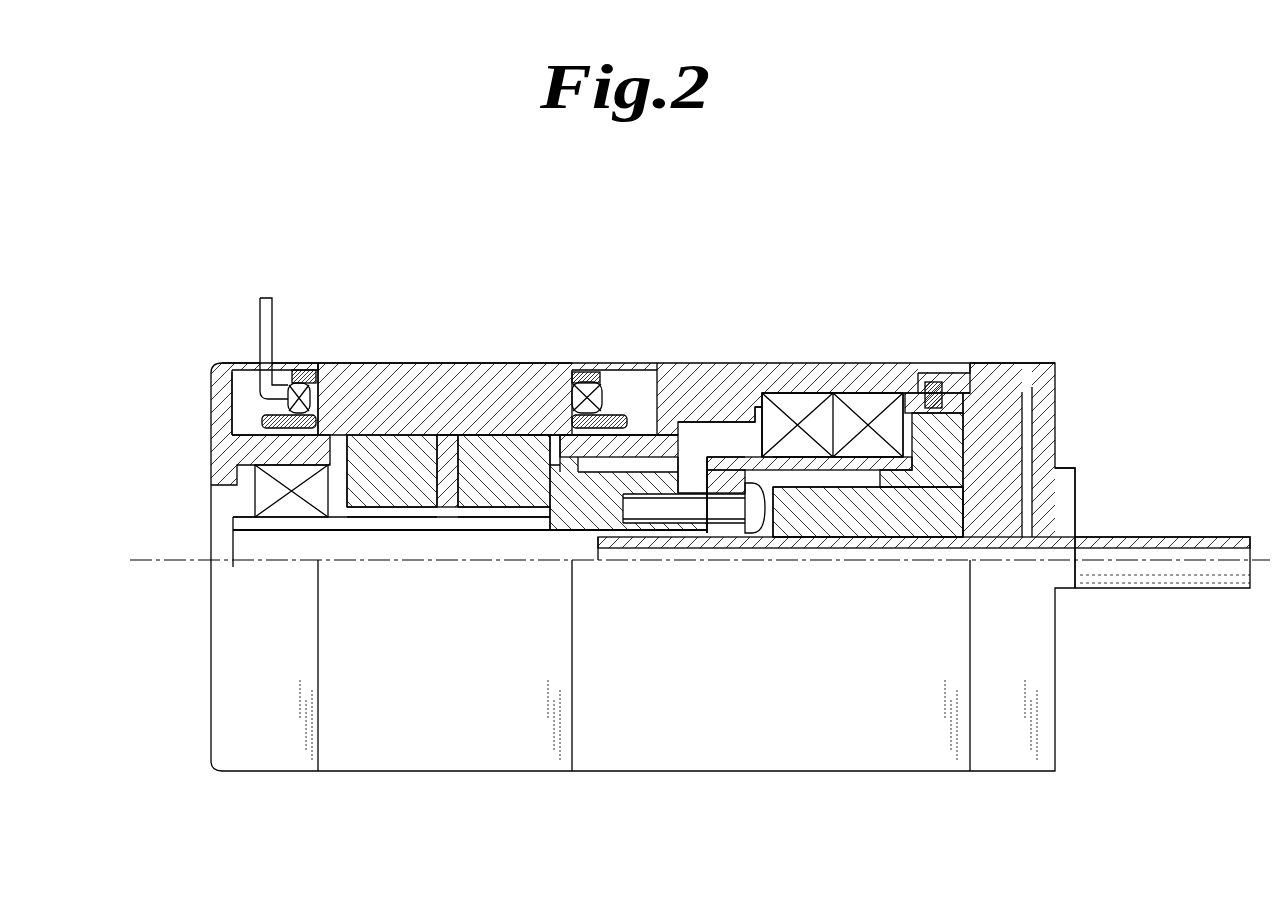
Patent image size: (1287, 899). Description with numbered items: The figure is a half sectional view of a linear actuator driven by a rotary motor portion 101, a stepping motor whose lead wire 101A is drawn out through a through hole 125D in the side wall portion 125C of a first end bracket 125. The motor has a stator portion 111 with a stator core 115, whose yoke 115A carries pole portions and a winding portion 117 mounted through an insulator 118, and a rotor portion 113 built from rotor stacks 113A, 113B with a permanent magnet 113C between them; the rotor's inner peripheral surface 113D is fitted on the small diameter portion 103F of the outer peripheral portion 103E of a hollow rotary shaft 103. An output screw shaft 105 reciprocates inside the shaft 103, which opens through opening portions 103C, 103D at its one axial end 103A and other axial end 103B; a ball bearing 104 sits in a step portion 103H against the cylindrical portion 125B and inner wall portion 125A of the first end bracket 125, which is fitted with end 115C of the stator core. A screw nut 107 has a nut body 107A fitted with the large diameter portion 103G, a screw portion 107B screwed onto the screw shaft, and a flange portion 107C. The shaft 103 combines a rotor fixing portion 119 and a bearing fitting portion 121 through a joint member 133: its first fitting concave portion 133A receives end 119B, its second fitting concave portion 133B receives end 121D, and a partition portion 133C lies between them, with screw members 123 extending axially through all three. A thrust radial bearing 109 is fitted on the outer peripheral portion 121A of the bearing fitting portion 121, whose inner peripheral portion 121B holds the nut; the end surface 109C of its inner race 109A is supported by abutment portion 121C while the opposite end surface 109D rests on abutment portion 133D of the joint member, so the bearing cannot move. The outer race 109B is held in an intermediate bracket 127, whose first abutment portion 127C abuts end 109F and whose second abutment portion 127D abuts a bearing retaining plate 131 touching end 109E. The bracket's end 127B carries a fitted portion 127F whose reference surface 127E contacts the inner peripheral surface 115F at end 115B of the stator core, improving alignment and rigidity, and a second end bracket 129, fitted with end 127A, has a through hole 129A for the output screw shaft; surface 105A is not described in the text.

The rotary motor portion 101 is at (373, 362).
The lead wire 101A is at (258, 318).
The hollow rotary shaft 103 is at (583, 530).
The one axial end 103A is at (1038, 363).
The other axial end 103B is at (247, 513).
The opening portion 103C is at (1077, 590).
The opening portion 103D is at (237, 533).
The outer peripheral portion 103E is at (480, 518).
The small diameter portion 103F is at (372, 517).
The large diameter portion 103G is at (850, 520).
The step portion 103H is at (330, 532).
The ball bearing 104 is at (265, 482).
The output screw shaft 105 is at (1238, 537).
The output shaft outer surface 105A is at (1180, 537).
The screw nut 107 is at (1003, 493).
The nut body 107A is at (805, 520).
The screw portion 107B is at (838, 515).
The flange portion 107C is at (1013, 412).
The thrust radial bearing 109 is at (865, 420).
The inner race 109A is at (818, 500).
The outer race 109B is at (842, 400).
The end surface 109C is at (875, 525).
The end surface 109D is at (780, 472).
The end 109E is at (903, 398).
The end 109F is at (790, 490).
The stator portion 111 is at (455, 400).
The rotor portion 113 is at (357, 505).
The rotor stack 113A is at (400, 510).
The rotor stack 113B is at (497, 508).
The permanent magnet 113C is at (445, 470).
The inner peripheral surface 113D is at (345, 507).
The stator core 115 is at (420, 395).
The yoke 115A is at (435, 363).
The end 115B is at (505, 405).
The end 115C is at (350, 363).
The inner peripheral surface 115F is at (528, 508).
The winding portion 117 is at (300, 383).
The insulator 118 is at (566, 385).
The rotor fixing portion 119 is at (468, 510).
The end 119B is at (660, 532).
The bearing fitting portion 121 is at (992, 445).
The outer peripheral portion 121A is at (789, 483).
The inner peripheral portion 121B is at (968, 530).
The abutment portion 121C is at (1003, 362).
The end 121D is at (713, 478).
The screw member 123 is at (630, 525).
The first end bracket 125 is at (218, 392).
The inner wall portion 125A is at (233, 388).
The cylindrical portion 125B is at (248, 447).
The side wall portion 125C is at (230, 362).
The through hole 125D is at (280, 362).
The intermediate bracket 127 is at (766, 452).
The end 127A is at (955, 373).
The end 127B is at (600, 375).
The first abutment portion 127C is at (737, 425).
The second abutment portion 127D is at (932, 392).
The reference surface 127E is at (572, 400).
The fitted portion 127F is at (568, 522).
The second end bracket 129 is at (1057, 450).
The through hole 129A is at (1075, 535).
The bearing retaining plate 131 is at (940, 385).
The joint member 133 is at (662, 447).
The first fitting concave portion 133A is at (636, 440).
The second fitting concave portion 133B is at (705, 462).
The partition portion 133C is at (706, 533).
The abutment portion 133D is at (727, 472).